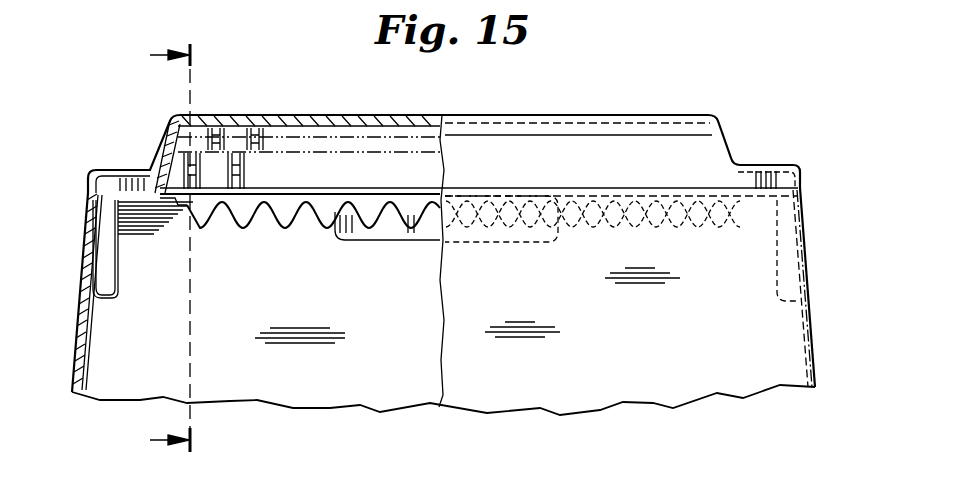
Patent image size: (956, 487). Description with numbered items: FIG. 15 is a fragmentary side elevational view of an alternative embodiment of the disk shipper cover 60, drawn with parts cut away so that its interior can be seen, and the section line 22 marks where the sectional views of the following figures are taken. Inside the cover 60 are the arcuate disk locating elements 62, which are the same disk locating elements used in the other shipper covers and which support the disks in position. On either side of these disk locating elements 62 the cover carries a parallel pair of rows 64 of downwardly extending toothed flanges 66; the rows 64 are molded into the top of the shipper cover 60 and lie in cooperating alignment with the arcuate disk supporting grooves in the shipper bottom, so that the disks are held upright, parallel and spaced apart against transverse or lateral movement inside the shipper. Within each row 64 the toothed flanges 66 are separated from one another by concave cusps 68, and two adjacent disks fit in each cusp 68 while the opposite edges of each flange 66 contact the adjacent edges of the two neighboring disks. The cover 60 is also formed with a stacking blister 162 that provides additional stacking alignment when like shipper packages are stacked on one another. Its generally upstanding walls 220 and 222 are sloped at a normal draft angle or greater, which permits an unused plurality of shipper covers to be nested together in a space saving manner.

The shipper cover 60 is at (66, 322).
The disk locating element 62 is at (176, 160).
The row of toothed flanges 64 is at (192, 210).
The downwardly extending toothed flange 66 is at (200, 210).
The concave cusp 68 is at (222, 212).
The stacking blister 162 is at (125, 168).
The upstanding wall 220 is at (730, 365).
The upstanding wall 222 is at (812, 350).
The section line 22- 22 is at (186, 248).